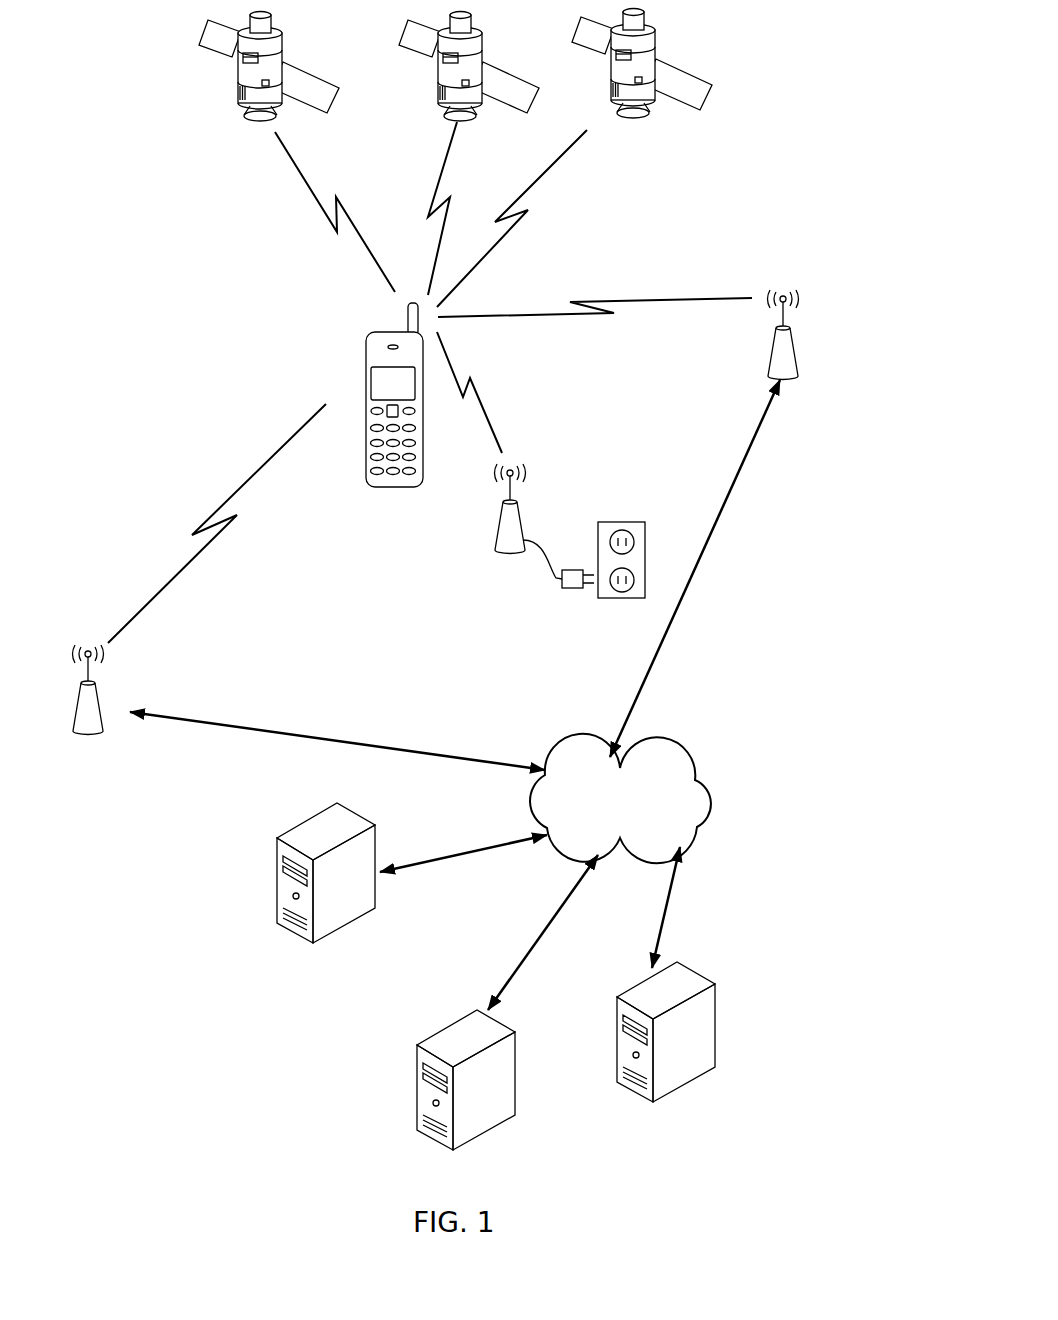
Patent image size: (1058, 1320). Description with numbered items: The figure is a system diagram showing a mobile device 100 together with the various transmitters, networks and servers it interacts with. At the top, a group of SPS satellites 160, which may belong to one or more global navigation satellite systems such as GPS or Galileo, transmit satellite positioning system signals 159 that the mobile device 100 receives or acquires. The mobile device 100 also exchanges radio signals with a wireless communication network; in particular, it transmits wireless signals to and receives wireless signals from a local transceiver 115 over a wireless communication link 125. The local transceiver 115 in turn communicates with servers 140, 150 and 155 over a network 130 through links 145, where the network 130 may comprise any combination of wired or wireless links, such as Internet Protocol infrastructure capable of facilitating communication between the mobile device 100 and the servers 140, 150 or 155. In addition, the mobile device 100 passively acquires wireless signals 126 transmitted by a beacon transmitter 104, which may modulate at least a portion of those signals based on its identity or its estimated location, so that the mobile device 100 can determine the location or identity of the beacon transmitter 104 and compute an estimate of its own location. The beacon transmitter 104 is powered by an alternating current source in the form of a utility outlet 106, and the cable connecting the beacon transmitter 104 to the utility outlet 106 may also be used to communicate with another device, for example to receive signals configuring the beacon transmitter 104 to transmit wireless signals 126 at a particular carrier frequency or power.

The mobile device 100 is at (366, 362).
The beacon transmitter 104 is at (500, 520).
The utility outlet 106 is at (610, 522).
The local transceiver 115 is at (793, 333).
The wireless communication link 125 is at (627, 300).
The wireless signals 126 is at (490, 403).
The network 130 is at (705, 778).
The server 140 is at (357, 812).
The links 145 is at (291, 738).
The server 150 is at (715, 988).
The server 155 is at (515, 1050).
The satellite positioning system signals 159 is at (296, 156).
The SPS satellites 160 is at (170, 78).